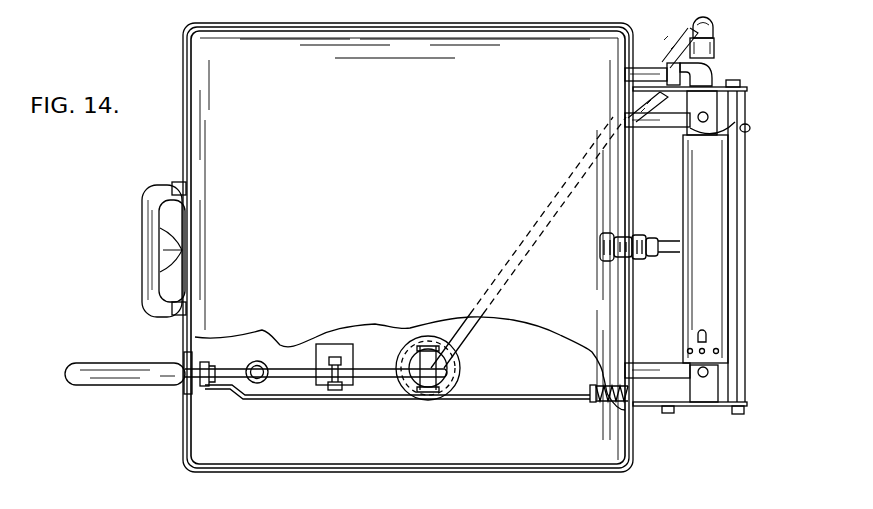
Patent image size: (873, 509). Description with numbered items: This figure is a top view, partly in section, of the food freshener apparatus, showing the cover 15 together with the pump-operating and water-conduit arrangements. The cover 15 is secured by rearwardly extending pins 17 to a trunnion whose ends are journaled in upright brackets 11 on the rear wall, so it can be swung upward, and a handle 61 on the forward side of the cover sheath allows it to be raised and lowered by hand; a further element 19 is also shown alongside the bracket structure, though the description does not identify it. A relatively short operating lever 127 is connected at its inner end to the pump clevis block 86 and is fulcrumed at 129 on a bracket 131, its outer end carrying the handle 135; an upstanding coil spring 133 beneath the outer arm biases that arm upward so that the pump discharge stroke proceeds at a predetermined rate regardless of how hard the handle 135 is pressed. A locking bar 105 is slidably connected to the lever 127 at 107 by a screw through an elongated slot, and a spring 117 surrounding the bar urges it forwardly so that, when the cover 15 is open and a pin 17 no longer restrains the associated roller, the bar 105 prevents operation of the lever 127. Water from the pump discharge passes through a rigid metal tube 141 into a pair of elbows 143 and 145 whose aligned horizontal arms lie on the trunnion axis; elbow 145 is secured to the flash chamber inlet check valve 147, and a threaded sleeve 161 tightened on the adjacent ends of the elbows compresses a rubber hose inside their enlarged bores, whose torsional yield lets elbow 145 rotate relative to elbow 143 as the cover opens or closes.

The upright brackets 11 is at (746, 92).
The cover 15 is at (403, 173).
The pins 17 is at (642, 128).
The cylinder 19 is at (712, 242).
The handle 61 is at (143, 226).
The pump clevis block 86 is at (415, 355).
The locking bar 105 is at (490, 397).
The screw connection 107 is at (214, 388).
The spring 117 is at (602, 400).
The operating lever 127 is at (297, 343).
The fulcrum 129 is at (343, 358).
The bracket 131 is at (350, 387).
The coil spring 133 is at (268, 333).
The handle 135 is at (120, 363).
The metal tube 141 is at (628, 102).
The elbow 143 is at (716, 27).
The elbow 145 is at (714, 70).
The flash chamber inlet check valve 147 is at (648, 72).
The threaded sleeve 161 is at (716, 46).